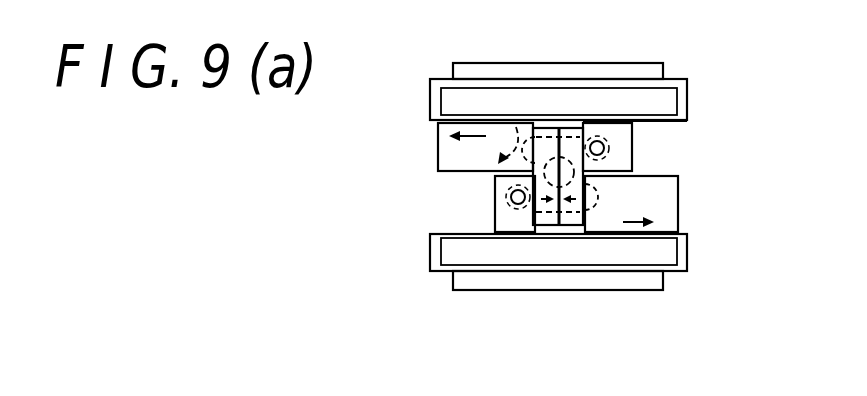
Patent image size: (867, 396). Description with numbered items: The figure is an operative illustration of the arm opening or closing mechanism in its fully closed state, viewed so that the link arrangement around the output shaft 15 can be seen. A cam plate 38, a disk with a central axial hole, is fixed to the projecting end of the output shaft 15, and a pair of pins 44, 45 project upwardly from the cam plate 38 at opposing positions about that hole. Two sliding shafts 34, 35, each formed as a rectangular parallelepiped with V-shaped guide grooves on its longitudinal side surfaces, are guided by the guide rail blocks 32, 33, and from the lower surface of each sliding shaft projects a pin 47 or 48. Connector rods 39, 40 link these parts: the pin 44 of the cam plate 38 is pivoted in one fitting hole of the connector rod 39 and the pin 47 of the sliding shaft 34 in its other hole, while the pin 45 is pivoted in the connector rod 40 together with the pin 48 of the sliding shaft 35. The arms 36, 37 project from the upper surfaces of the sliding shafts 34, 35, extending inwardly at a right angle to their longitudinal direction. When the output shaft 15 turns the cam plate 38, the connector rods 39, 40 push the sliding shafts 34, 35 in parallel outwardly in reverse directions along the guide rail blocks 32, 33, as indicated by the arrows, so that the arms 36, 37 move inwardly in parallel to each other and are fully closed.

The output shaft 15 is at (563, 157).
The guide rail block 32 is at (551, 255).
The guide rail block 33 is at (570, 103).
The sliding shaft 34 is at (665, 215).
The sliding shaft 35 is at (455, 152).
The arm 36 is at (542, 223).
The arm 37 is at (623, 121).
The cam plate 38 is at (617, 183).
The connector rod 39 is at (511, 196).
The connector rod 40 is at (622, 151).
The pin 44 is at (585, 212).
The pin 45 is at (528, 138).
The pin 47 is at (511, 206).
The pin 48 is at (604, 147).